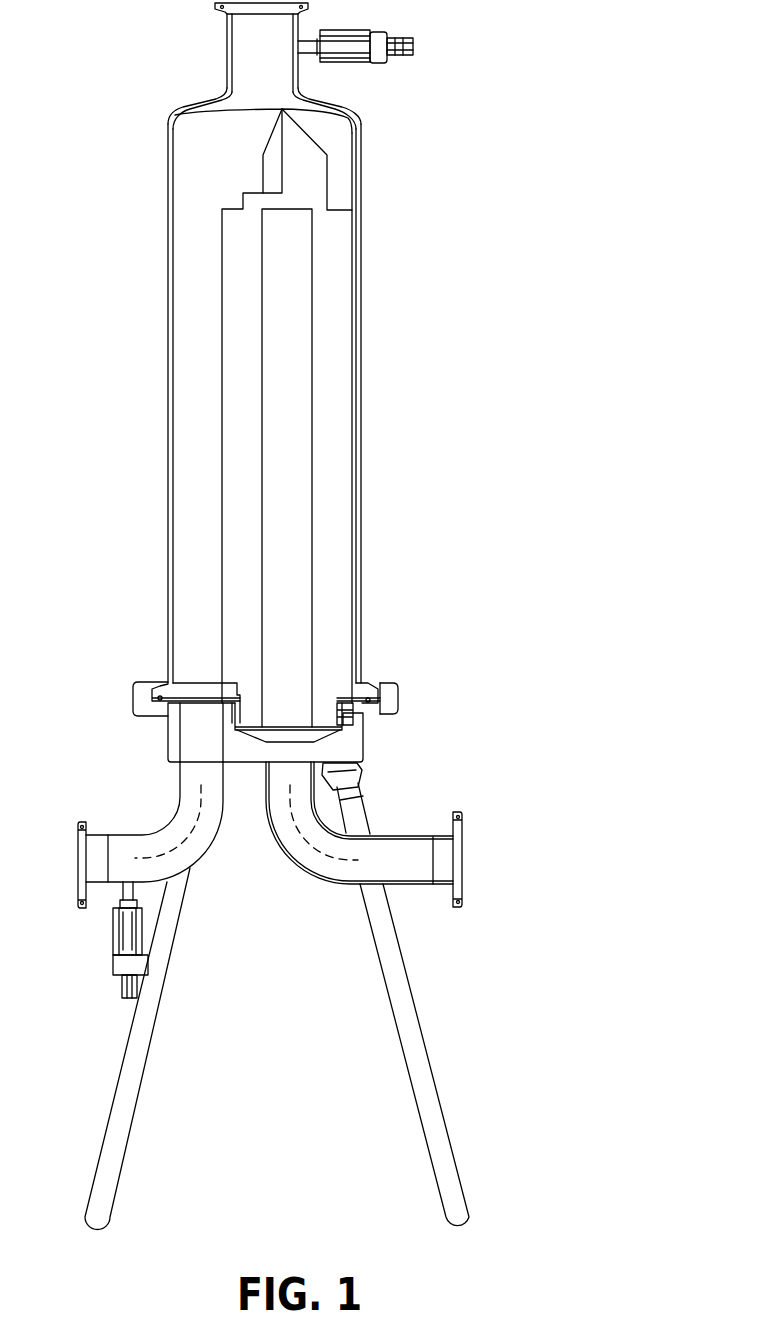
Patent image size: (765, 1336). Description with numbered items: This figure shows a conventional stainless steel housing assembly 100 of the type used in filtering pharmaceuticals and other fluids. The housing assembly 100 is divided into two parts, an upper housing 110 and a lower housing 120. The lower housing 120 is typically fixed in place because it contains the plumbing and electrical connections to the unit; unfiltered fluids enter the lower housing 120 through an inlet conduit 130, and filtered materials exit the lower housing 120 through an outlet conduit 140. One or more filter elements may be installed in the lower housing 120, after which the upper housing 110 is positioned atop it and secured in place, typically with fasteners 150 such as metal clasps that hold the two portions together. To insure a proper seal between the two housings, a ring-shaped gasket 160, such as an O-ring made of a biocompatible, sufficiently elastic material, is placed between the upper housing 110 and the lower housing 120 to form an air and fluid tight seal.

The housing assembly 100 is at (327, 616).
The upper housing 110 is at (362, 478).
The lower housing 120 is at (365, 742).
The inlet conduit 130 is at (80, 822).
The outlet conduit 140 is at (460, 907).
The fasteners 150 is at (398, 690).
The gasket 160 is at (360, 683).